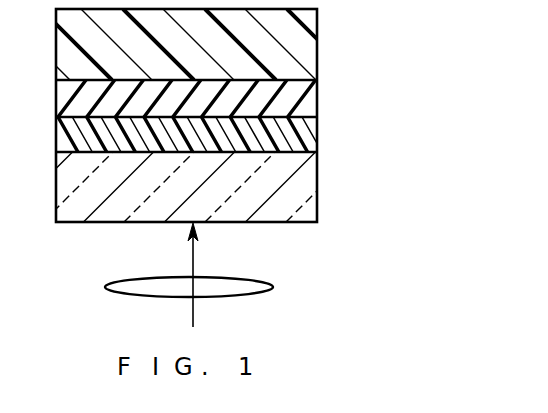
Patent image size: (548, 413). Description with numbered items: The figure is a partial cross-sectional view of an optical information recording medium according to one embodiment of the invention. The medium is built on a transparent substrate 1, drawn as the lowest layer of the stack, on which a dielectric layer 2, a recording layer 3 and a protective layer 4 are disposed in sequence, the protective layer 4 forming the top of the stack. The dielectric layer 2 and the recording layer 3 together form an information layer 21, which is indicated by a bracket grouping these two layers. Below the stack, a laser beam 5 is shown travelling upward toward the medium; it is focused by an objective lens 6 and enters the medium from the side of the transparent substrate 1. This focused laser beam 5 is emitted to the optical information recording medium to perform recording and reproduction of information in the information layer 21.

The transparent substrate 1 is at (312, 185).
The dielectric layer 2 is at (312, 138).
The recording layer 3 is at (312, 90).
The protective layer 4 is at (312, 45).
The information layer 21 is at (262, 112).
The laser beam 5 is at (193, 312).
The objective lens 6 is at (273, 285).